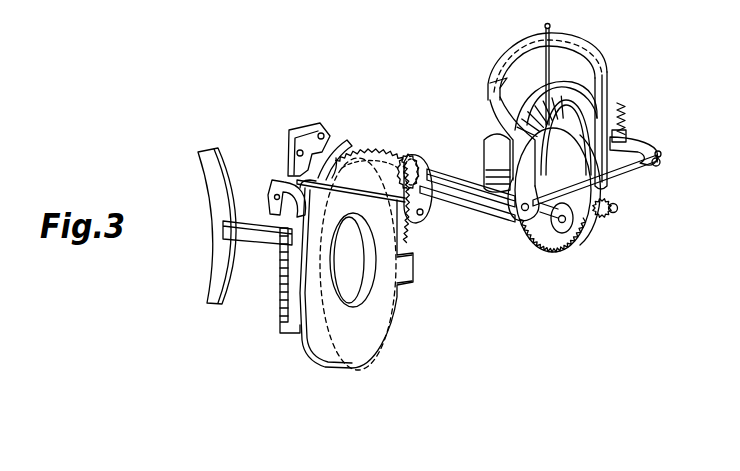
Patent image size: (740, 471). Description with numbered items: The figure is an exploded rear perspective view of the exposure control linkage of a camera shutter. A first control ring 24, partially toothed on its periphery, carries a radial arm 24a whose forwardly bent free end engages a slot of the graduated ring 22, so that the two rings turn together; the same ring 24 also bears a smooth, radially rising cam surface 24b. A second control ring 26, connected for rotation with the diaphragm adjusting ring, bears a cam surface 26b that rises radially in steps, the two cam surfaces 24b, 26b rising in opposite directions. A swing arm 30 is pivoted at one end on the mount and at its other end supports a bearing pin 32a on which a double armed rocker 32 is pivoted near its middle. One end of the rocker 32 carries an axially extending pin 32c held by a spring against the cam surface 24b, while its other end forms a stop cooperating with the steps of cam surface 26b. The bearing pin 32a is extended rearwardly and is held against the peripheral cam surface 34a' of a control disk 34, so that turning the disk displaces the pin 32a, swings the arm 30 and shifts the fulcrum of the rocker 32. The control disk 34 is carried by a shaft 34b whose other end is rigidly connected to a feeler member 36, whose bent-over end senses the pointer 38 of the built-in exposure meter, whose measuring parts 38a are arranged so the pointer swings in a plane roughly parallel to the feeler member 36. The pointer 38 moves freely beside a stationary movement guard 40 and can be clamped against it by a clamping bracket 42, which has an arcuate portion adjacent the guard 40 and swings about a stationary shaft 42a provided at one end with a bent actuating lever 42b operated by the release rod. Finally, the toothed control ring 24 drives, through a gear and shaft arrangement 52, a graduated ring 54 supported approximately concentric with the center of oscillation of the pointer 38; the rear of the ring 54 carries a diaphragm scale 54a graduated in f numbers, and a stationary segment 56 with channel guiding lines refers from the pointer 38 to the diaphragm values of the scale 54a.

The ring 22 is at (213, 278).
The first control ring 24 is at (379, 160).
The radial arm 24a is at (263, 236).
The cam surface 24b is at (348, 140).
The second control ring 26 is at (315, 358).
The cam surface 26b is at (279, 292).
The swing arm 30 is at (305, 140).
The rocker 32 is at (280, 185).
The bearing pin 32a is at (360, 189).
The pin 32c is at (335, 160).
The control disk 34 is at (438, 134).
The peripheral cam surface 34a' is at (424, 276).
The shaft 34b is at (470, 208).
The feeler member 36 is at (593, 177).
The pointer 38 is at (540, 75).
The measuring parts 38a is at (500, 198).
The movement guard 40 is at (495, 66).
The clamping bracket 42 is at (610, 85).
The stationary shaft 42a is at (657, 160).
The actuating lever 42b is at (634, 150).
The gear and shaft arrangement 52 is at (410, 157).
The graduated ring 54 is at (563, 248).
The diaphragm scale 54a is at (515, 143).
The stationary segment 56 is at (563, 70).